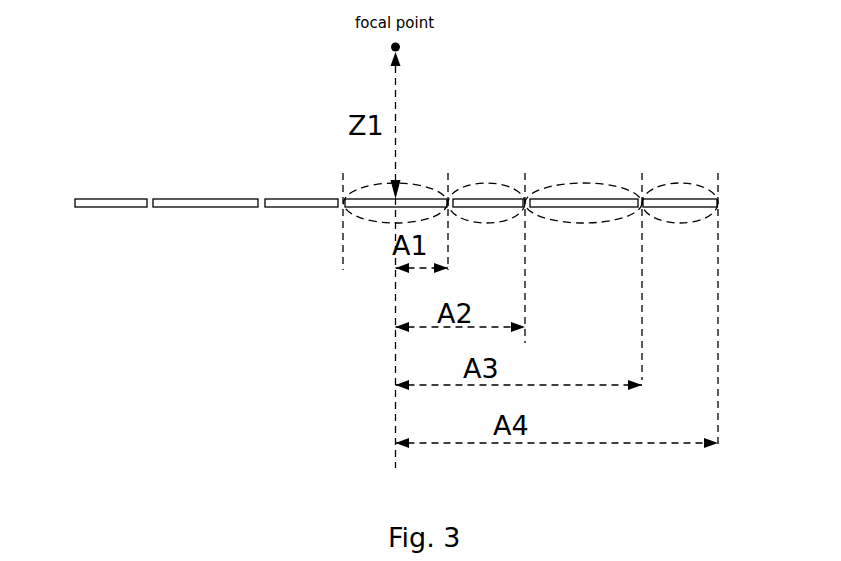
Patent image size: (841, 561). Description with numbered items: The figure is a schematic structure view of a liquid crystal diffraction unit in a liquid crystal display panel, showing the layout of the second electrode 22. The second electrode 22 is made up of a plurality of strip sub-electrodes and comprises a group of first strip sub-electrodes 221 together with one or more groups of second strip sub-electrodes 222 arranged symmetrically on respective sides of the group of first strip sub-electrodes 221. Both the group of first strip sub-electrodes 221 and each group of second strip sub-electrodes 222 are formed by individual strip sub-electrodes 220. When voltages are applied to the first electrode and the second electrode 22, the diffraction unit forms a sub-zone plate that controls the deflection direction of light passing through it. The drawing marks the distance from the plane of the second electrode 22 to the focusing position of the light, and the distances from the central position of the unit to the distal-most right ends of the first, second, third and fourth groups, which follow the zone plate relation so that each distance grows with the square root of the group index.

The second electrode 22 is at (389, 198).
The strip sub-electrode 220 is at (130, 208).
The group of first strip sub-electrodes 221 is at (418, 182).
The group of second strip sub-electrodes 222 is at (663, 183).